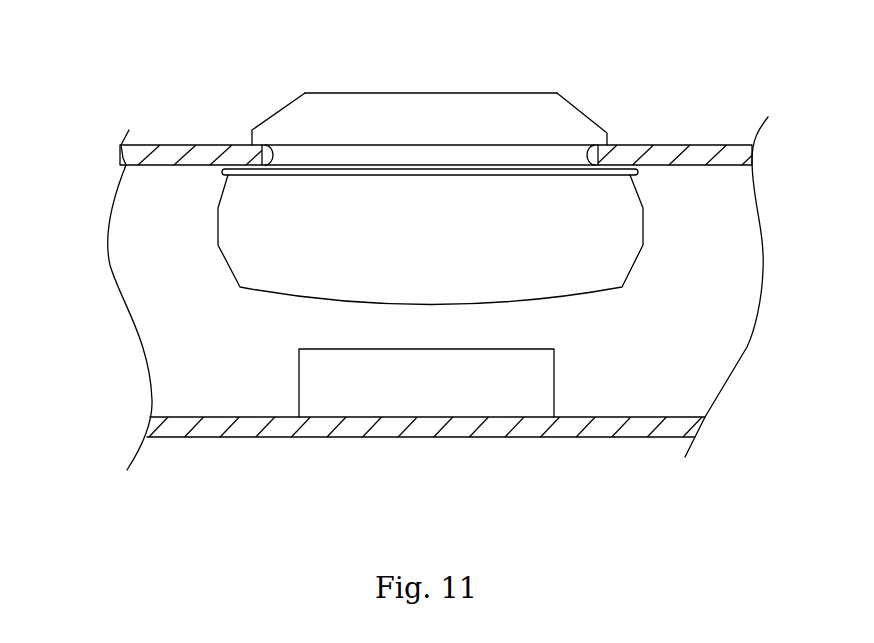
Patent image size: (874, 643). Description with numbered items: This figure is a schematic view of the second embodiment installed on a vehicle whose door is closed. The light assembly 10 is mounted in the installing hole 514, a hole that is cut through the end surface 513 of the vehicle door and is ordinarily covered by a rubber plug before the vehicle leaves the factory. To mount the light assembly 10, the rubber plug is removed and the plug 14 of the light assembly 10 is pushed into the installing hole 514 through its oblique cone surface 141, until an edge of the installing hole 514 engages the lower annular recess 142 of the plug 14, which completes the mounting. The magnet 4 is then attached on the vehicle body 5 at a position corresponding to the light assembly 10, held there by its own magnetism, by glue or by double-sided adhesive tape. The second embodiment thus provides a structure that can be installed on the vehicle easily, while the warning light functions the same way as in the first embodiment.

The magnet 4 is at (478, 450).
The vehicle body 5 is at (426, 471).
The light assembly 10 is at (533, 281).
The plug 14 is at (515, 89).
The oblique cone surface 141 is at (542, 69).
The lower annular recess 142 is at (430, 89).
The end surface 513 is at (390, 202).
The installing hole 514 is at (361, 126).